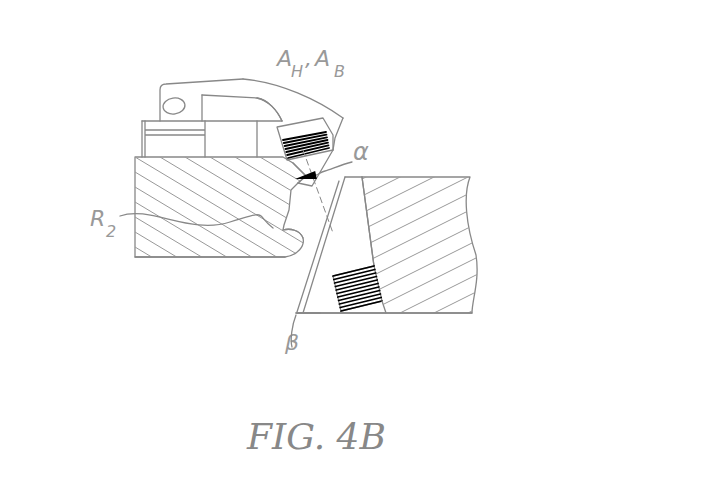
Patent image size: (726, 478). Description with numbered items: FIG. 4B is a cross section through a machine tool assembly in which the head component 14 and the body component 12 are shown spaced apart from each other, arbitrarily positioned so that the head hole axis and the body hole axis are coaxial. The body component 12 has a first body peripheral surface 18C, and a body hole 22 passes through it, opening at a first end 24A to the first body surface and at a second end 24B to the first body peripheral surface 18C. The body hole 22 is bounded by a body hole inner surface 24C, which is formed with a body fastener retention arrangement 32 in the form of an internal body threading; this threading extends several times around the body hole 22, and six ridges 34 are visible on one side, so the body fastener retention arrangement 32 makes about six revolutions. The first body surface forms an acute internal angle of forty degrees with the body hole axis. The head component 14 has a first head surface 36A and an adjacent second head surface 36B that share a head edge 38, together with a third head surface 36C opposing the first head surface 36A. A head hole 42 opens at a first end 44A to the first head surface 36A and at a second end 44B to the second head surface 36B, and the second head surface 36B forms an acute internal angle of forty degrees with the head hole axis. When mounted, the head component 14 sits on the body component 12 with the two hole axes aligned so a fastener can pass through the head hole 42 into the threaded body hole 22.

The body component 12 is at (446, 153).
The head component 14 is at (203, 51).
The first body peripheral surface 18C is at (317, 315).
The body hole 22 is at (262, 253).
The first end 24A is at (312, 232).
The second end 24B is at (385, 346).
The body hole inner surface 24C is at (352, 227).
The body fastener retention arrangement 32 is at (360, 313).
The ridges 34 is at (386, 298).
The first head surface 36A is at (341, 92).
The second head surface 36B is at (367, 130).
The third head surface 36C is at (207, 258).
The head edge 38 is at (342, 119).
The head hole 42 is at (288, 181).
The first end 44A is at (274, 101).
The second end 44B is at (295, 248).